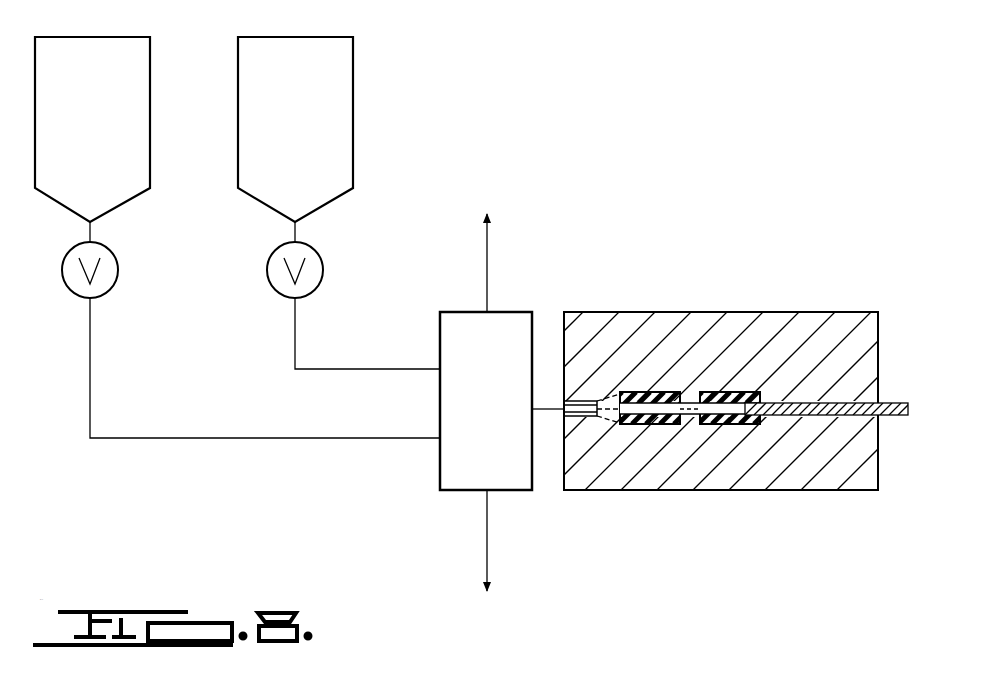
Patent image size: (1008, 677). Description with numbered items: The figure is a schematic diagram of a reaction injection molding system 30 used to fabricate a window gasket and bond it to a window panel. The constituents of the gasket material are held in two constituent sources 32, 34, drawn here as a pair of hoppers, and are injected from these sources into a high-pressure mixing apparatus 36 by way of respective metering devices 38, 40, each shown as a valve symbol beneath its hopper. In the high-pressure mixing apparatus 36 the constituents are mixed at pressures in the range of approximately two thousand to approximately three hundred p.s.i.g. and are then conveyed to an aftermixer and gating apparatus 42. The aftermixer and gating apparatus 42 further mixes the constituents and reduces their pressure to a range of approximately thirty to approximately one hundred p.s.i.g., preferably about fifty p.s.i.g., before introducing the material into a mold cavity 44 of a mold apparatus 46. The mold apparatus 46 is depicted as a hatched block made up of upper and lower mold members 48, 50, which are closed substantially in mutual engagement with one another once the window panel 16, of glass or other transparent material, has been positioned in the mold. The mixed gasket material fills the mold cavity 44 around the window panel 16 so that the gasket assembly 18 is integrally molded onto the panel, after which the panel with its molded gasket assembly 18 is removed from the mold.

The window panel 16 is at (898, 403).
The gasket assembly 18 is at (726, 428).
The reaction injection molding system 30 is at (291, 474).
The constituent source 32 is at (104, 137).
The constituent source 34 is at (308, 137).
The high-pressure mixing apparatus 36 is at (496, 423).
The metering device 38 is at (118, 272).
The metering device 40 is at (322, 272).
The aftermixer and gating apparatus 42 is at (580, 414).
The mold cavity 44 is at (733, 394).
The mold apparatus 46 is at (826, 309).
The mold member 48 is at (687, 325).
The mold member 50 is at (843, 478).